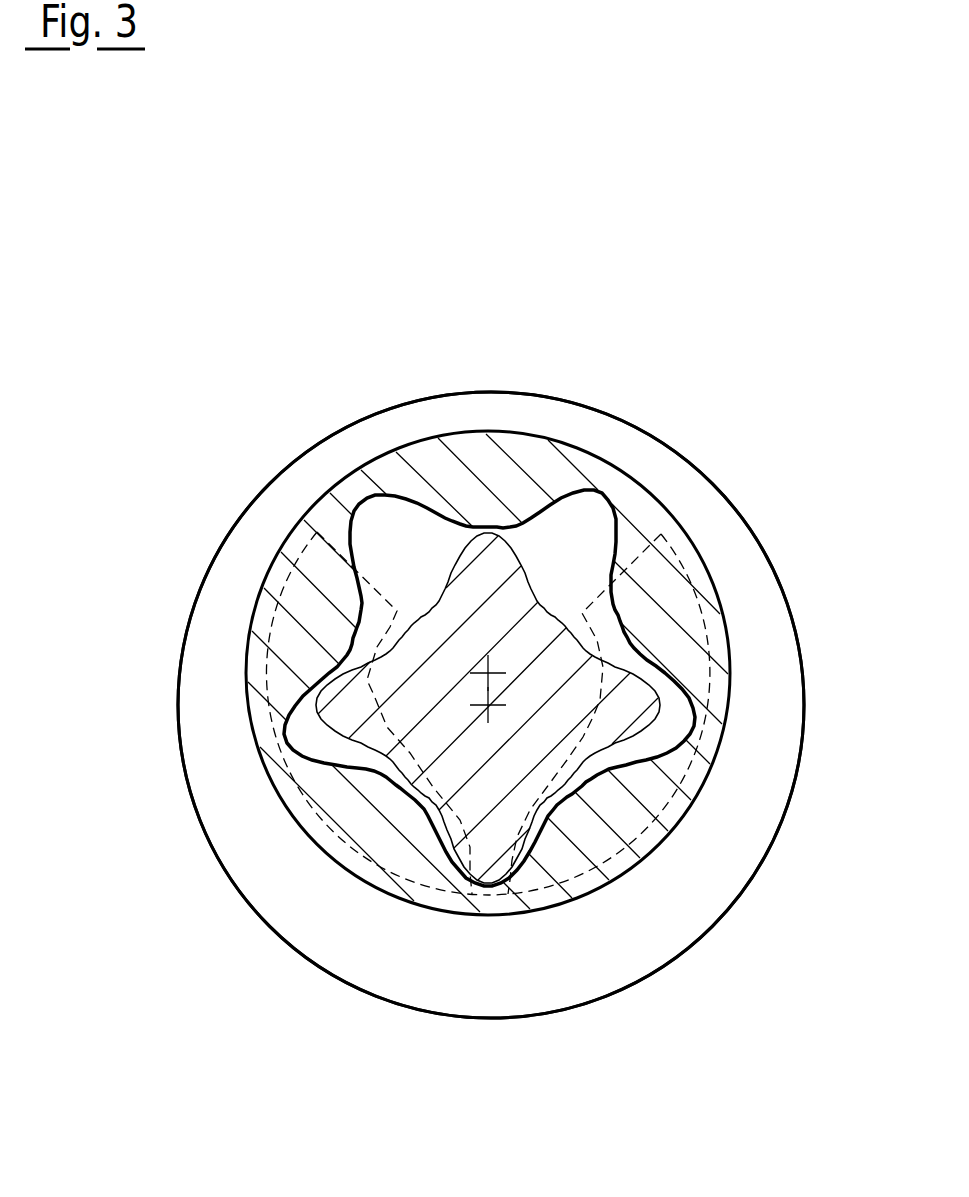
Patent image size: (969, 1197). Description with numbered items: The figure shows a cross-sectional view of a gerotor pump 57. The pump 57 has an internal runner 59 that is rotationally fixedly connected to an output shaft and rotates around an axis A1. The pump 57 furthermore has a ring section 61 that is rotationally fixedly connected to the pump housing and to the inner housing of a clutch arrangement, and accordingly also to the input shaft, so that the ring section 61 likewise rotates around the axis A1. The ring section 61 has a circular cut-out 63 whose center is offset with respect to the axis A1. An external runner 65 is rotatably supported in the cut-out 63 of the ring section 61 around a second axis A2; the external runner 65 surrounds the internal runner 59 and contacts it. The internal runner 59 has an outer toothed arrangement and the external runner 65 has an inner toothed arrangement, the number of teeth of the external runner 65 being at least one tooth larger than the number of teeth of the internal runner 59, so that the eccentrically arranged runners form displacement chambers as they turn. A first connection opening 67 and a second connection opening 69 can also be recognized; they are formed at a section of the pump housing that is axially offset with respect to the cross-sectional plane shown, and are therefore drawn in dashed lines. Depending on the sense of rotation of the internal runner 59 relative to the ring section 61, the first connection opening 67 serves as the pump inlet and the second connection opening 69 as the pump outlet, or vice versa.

The gerotor pump 57 is at (247, 1003).
The internal runner 59 is at (528, 580).
The ring section 61 is at (650, 437).
The circular cut-out 63 is at (706, 505).
The external runner 65 is at (700, 579).
The first connection opening 67 is at (380, 589).
The second connection opening 69 is at (595, 590).
The axis A1 is at (547, 708).
The axis A2 is at (524, 707).